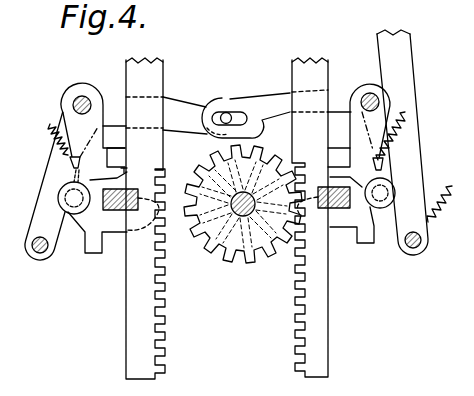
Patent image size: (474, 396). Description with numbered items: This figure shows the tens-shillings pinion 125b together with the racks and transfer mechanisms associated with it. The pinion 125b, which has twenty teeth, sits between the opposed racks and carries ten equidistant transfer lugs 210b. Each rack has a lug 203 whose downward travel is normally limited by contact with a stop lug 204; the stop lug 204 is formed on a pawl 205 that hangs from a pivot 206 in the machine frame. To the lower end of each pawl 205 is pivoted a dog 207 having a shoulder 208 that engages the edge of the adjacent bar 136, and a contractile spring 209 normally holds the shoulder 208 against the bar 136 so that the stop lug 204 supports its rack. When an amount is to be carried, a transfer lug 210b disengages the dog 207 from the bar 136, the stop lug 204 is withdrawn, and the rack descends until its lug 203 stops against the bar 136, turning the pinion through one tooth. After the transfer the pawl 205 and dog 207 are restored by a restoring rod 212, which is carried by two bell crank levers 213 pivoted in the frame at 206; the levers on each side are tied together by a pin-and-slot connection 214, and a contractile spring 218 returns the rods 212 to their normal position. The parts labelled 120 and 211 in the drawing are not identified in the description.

The lug 203 is at (113, 161).
The stop lug 204 is at (163, 174).
The pawl 205 is at (106, 122).
The pivot 206 is at (78, 99).
The dog 207 is at (110, 240).
The shoulder 208 is at (330, 226).
The contractile spring 209 is at (50, 124).
The roller 211 is at (91, 248).
The restoring rod 212 is at (41, 254).
The bell crank lever 213 is at (48, 177).
The pin-and-slot connection 214 is at (226, 116).
The contractile spring 218 is at (428, 224).
The bar 136 is at (110, 211).
The gear tooth 120 is at (240, 261).
The tens-shillings pinion 125b is at (262, 259).
The transfer lug 210b is at (224, 260).